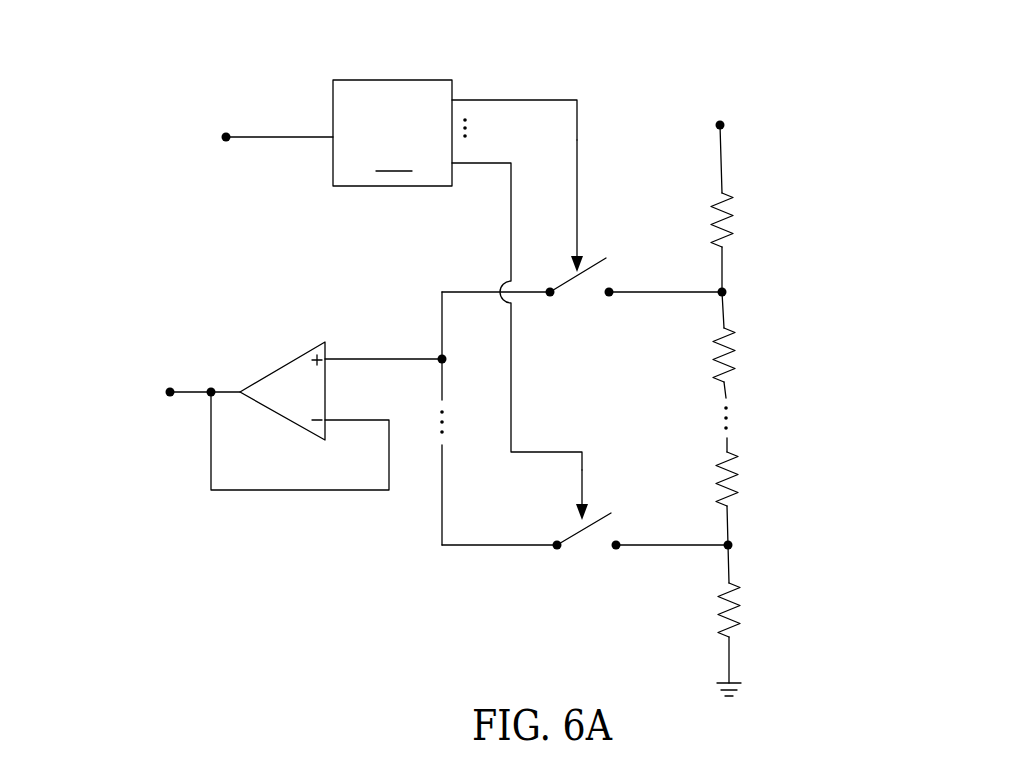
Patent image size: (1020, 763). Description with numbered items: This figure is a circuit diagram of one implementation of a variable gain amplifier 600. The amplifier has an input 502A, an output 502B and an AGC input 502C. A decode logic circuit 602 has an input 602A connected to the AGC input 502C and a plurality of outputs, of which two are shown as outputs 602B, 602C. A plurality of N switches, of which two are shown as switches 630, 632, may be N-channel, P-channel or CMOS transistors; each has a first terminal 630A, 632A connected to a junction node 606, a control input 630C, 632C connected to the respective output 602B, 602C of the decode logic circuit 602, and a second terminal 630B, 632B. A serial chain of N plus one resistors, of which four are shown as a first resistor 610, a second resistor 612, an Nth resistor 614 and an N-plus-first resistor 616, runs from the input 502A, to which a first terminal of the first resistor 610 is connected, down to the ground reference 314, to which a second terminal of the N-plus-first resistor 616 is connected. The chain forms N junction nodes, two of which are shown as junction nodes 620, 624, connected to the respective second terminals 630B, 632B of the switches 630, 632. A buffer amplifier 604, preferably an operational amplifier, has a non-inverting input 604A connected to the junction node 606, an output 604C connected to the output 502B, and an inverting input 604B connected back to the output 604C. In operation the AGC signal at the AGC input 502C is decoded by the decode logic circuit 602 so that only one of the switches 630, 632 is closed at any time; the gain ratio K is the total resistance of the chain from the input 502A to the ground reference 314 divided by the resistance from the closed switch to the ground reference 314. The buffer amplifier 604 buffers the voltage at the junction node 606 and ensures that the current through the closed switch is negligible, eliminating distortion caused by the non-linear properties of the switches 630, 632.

The variable gain amplifier 600 is at (240, 58).
The input of the variable gain amplifier 502A is at (721, 122).
The output of the variable gain amplifier 502B is at (170, 389).
The AGC input 502C is at (226, 133).
The decode logic circuit 602 is at (400, 133).
The input of the decode logic circuit 602A is at (333, 135).
The output of the decode logic circuit 602B is at (453, 99).
The output of the decode logic circuit 602C is at (453, 163).
The buffer amplifier 604 is at (287, 354).
The non-inverting input 604A is at (326, 357).
The inverting input 604B is at (326, 417).
The output of the buffer amplifier 604C is at (257, 366).
The junction node 606 is at (441, 357).
The first resistor 610 is at (734, 220).
The second resistor 612 is at (736, 355).
The Nth resistor 614 is at (738, 472).
The (N+1)th resistor 616 is at (740, 607).
The junction node 620 is at (726, 292).
The junction node 624 is at (732, 545).
The switch 630 is at (591, 285).
The first terminal 630A is at (550, 288).
The second terminal 630B is at (612, 290).
The control input 630C is at (578, 200).
The switch 632 is at (597, 517).
The first terminal 632A is at (557, 542).
The second terminal 632B is at (618, 543).
The control input 632C is at (583, 470).
The ground reference 314 is at (733, 683).